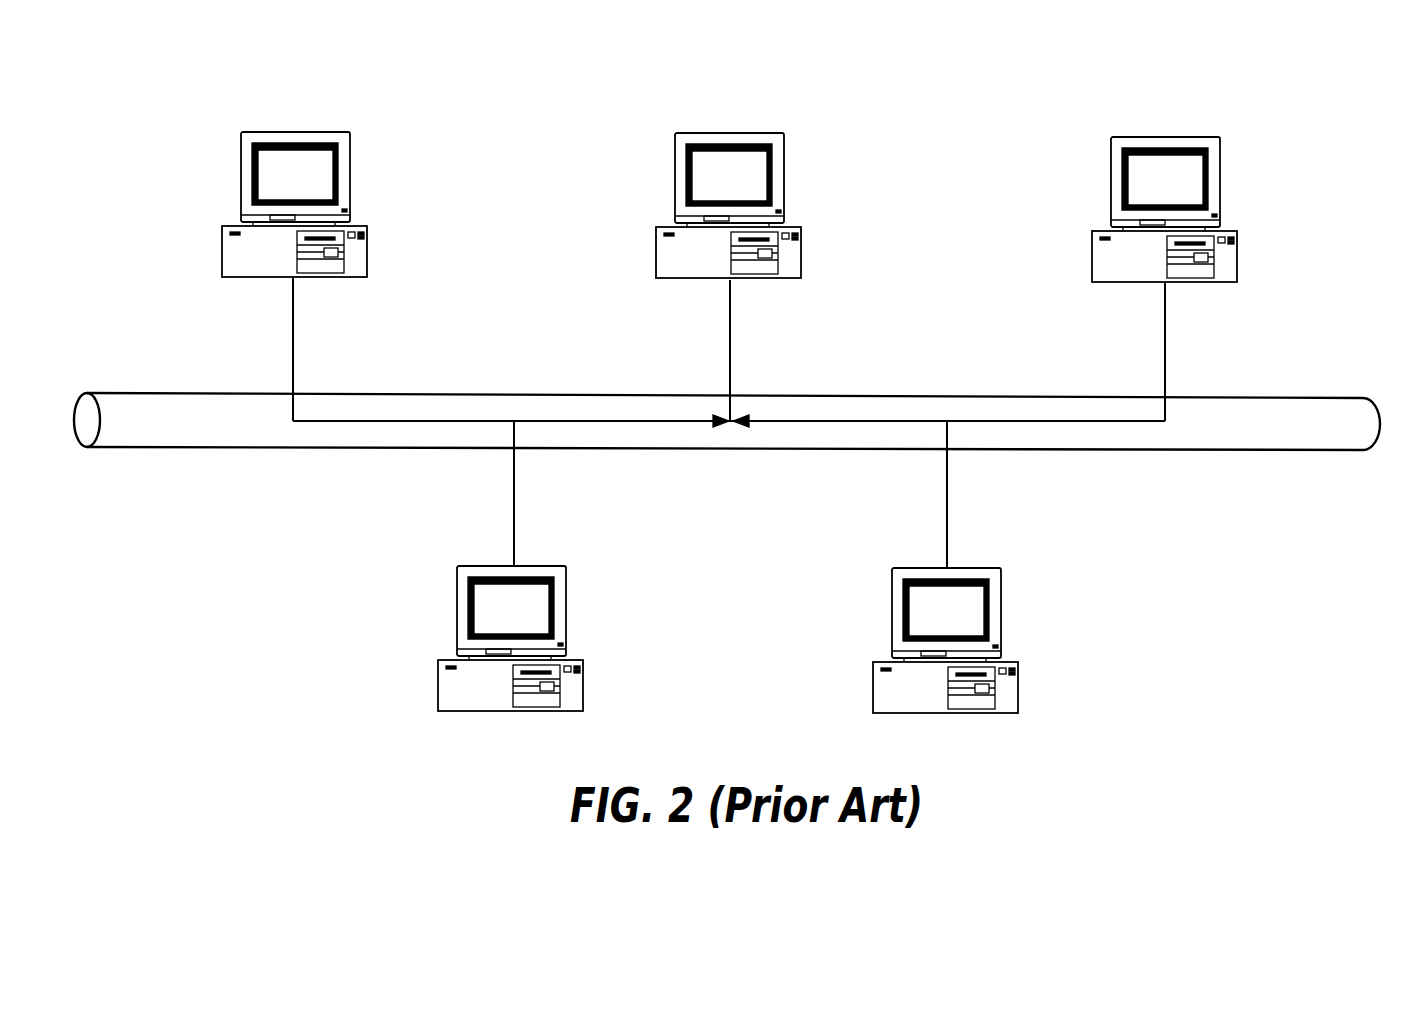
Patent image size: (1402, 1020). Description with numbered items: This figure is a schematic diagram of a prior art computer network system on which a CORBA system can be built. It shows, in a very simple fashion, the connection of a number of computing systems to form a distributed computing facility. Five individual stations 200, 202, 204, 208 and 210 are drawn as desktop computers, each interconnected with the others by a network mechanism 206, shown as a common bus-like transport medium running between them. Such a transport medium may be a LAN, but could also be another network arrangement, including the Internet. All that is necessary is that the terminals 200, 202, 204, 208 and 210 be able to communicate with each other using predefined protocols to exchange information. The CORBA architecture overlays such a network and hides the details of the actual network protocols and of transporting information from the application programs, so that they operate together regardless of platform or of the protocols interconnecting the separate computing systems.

The station 200 is at (316, 189).
The station 202 is at (750, 191).
The station 204 is at (1186, 194).
The network bus 206 is at (727, 422).
The station 208 is at (531, 623).
The station 210 is at (967, 625).